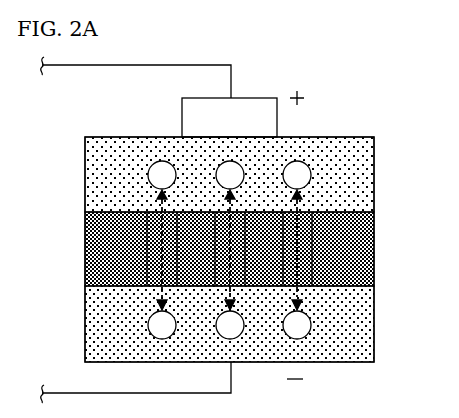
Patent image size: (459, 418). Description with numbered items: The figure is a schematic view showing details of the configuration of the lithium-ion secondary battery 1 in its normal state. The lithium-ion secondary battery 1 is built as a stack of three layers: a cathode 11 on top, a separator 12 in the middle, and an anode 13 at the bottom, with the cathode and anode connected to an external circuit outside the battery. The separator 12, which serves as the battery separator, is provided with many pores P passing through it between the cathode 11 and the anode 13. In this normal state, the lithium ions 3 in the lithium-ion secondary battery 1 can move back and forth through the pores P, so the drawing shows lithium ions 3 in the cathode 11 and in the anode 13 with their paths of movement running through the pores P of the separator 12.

The lithium-ion secondary battery 1 is at (39, 137).
The cathode 11 is at (85, 177).
The separator 12 is at (85, 251).
The anode 13 is at (85, 327).
The lithium ions 3 is at (163, 165).
The pores P is at (170, 240).